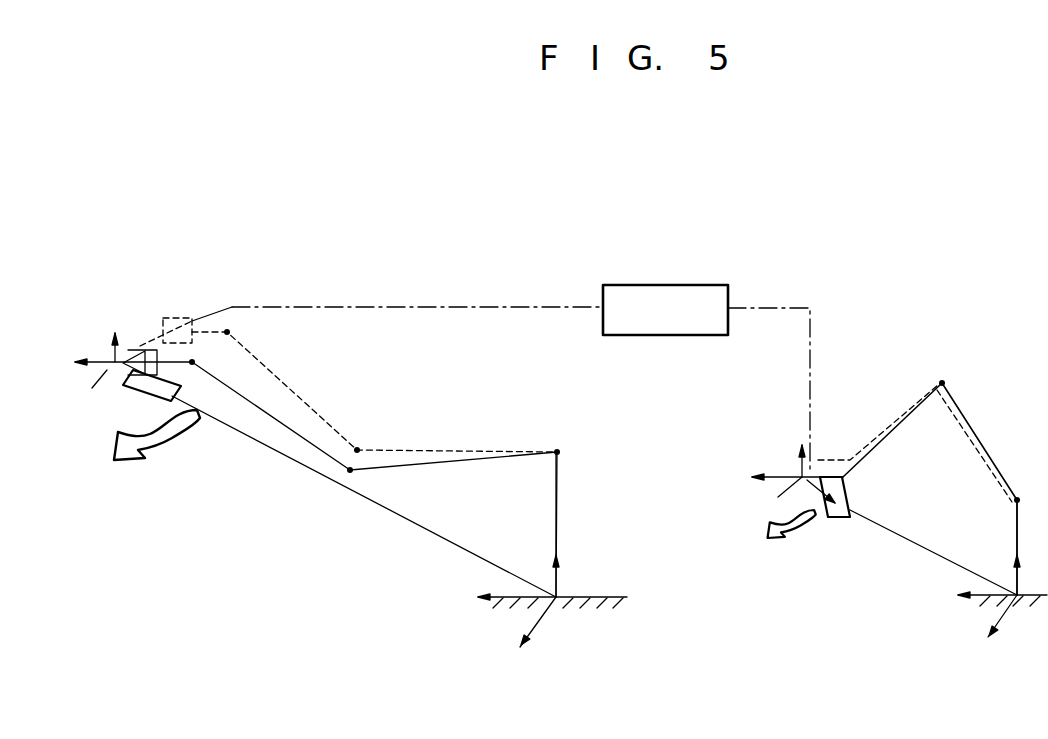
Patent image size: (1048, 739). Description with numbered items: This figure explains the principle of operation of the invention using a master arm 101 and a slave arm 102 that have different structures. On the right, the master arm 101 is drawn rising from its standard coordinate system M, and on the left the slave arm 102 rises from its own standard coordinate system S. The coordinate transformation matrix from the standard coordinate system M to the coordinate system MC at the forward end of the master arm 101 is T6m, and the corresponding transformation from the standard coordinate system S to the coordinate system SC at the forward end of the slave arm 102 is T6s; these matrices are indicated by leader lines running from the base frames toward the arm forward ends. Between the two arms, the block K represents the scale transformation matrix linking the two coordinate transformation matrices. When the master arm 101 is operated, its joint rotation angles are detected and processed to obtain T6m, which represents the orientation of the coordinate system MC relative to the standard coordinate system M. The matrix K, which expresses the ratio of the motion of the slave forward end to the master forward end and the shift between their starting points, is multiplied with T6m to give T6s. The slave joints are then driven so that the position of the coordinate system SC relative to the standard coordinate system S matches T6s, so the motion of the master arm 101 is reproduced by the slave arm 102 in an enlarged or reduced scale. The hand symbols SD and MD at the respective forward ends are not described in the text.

The scale transformation matrix K is at (665, 310).
The coordinate system of the forward end of the slave arm SC is at (115, 362).
The slave hand / tool SD is at (137, 347).
The slave arm 102 is at (487, 453).
The slave arm coordinate transform matrix T6s is at (353, 490).
The standard coordinate system of the slave arm S is at (539, 551).
The coordinate system of the forward end of the master arm MC is at (772, 477).
The master hand / grip MD is at (818, 462).
The master arm 101 is at (978, 430).
The master arm coordinate transform matrix T6m is at (908, 540).
The standard coordinate system of the master arm M is at (989, 575).